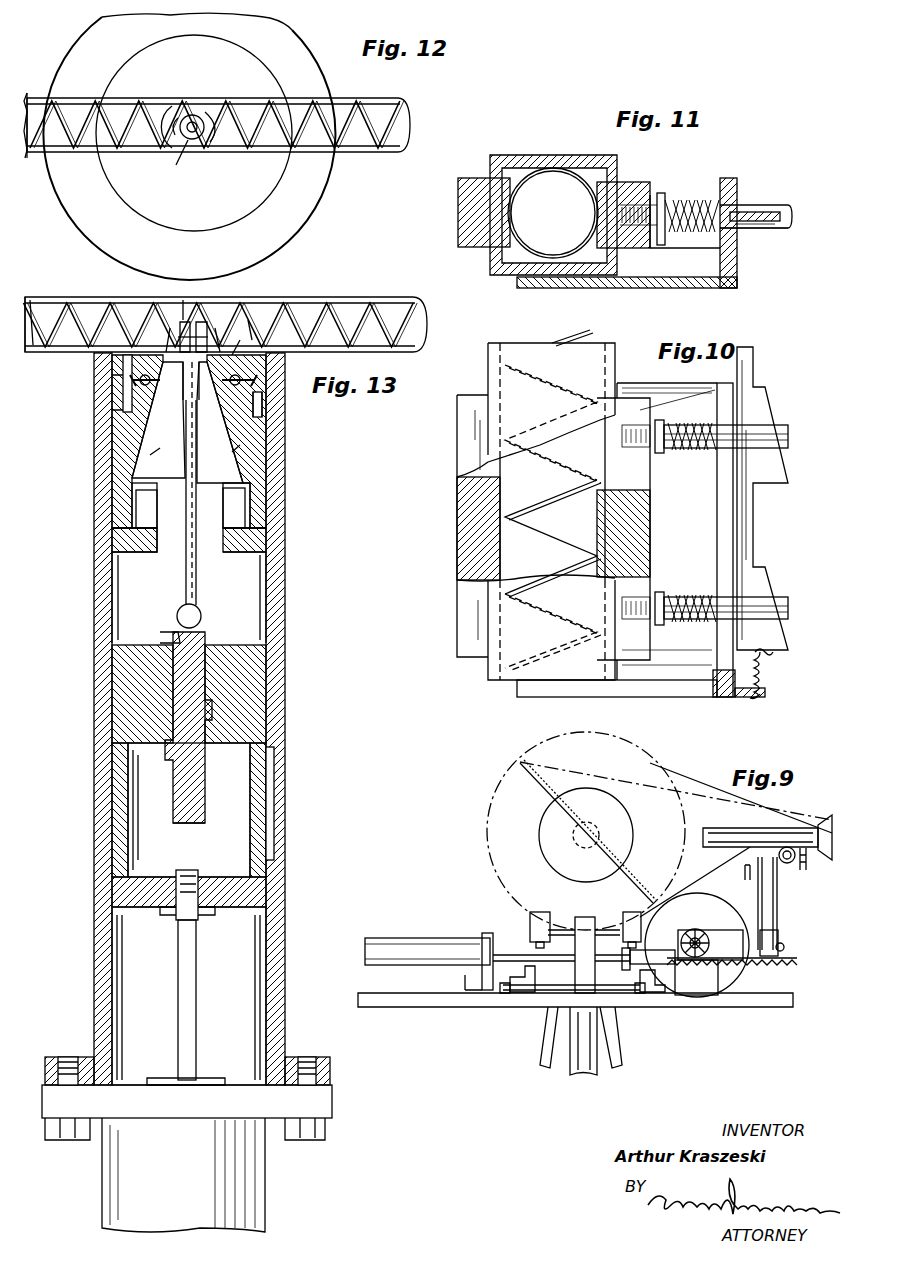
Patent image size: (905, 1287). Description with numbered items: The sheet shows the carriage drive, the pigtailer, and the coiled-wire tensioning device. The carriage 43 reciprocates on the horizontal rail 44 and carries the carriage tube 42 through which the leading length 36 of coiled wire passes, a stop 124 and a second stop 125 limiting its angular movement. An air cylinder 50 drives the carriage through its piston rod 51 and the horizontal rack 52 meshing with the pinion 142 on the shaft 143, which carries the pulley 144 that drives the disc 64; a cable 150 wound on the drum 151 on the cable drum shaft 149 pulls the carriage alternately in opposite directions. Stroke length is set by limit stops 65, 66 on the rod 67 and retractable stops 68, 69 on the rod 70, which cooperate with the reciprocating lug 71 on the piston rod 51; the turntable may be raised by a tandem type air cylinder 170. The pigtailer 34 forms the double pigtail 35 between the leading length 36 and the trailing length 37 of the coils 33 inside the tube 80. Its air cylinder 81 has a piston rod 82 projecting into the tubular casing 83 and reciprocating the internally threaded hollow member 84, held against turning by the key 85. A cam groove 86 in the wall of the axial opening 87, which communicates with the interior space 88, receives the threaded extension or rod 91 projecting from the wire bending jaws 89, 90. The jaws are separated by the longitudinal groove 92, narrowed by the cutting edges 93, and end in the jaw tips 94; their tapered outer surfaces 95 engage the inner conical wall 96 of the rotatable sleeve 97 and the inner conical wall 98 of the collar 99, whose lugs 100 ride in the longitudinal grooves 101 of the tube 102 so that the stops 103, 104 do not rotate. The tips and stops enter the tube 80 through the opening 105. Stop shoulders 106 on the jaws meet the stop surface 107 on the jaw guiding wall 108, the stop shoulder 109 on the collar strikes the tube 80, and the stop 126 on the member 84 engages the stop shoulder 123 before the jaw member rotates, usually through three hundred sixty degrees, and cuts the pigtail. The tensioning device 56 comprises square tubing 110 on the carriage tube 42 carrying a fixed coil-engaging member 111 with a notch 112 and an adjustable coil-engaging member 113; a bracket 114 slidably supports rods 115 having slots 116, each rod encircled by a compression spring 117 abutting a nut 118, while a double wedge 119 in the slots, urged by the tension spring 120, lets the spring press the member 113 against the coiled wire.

In FIG. 12, the coiled wire 33 is at (217, 126).
In FIG. 13, the coiled wire 33 is at (345, 300).
In FIG. 11, the coiled wire 33 is at (545, 258).
In FIG. 10, the coiled wire 33 is at (552, 540).
In FIG. 12, the pigtailer 34 is at (252, 200).
In FIG. 13, the pigtailer 34 is at (288, 662).
In FIG. 13, the double pigtail 35 is at (193, 322).
In FIG. 12, the leading length 36 is at (115, 140).
In FIG. 13, the leading length 36 is at (80, 300).
In FIG. 12, the trailing length 37 is at (234, 140).
In FIG. 13, the trailing length 37 is at (250, 300).
In FIG. 9, the carriage tube 42 is at (785, 830).
In FIG. 9, the carriage 43 is at (788, 865).
In FIG. 9, the horizontal rail 44 is at (815, 858).
In FIG. 9, the air cylinder 50 is at (398, 940).
In FIG. 9, the piston rod 51 is at (560, 961).
In FIG. 9, the horizontal rack 52 is at (752, 960).
In FIG. 11, the tensioning device 56 is at (748, 268).
In FIG. 10, the tensioning device 56 is at (700, 703).
In FIG. 9, the disc 64 is at (552, 865).
In FIG. 9, the limit stop 65 is at (518, 993).
In FIG. 9, the limit stop 66 is at (650, 993).
In FIG. 9, the rod 67 is at (545, 990).
In FIG. 9, the retractable stop 68 is at (536, 947).
In FIG. 9, the retractable stop 69 is at (623, 937).
In FIG. 9, the rod 70 is at (565, 925).
In FIG. 9, the reciprocating lug 71 is at (630, 962).
In FIG. 12, the tube 80 is at (357, 156).
In FIG. 13, the tube 80 is at (393, 310).
In FIG. 13, the air cylinder 81 is at (260, 1185).
In FIG. 13, the piston rod 82 is at (195, 1020).
In FIG. 13, the tubular casing 83 is at (275, 950).
In FIG. 13, the internally threaded hollow member 84 is at (258, 900).
In FIG. 13, the key 85 is at (268, 818).
In FIG. 13, the cam groove 86 is at (220, 722).
In FIG. 13, the axial opening 87 is at (210, 655).
In FIG. 13, the interior space 88 is at (225, 853).
In FIG. 13, the wire bending jaw 89 is at (222, 578).
In FIG. 13, the wire bending jaw 90 is at (162, 585).
In FIG. 13, the extension or rod 91 is at (180, 826).
In FIG. 13, the longitudinal groove 92 is at (195, 505).
In FIG. 12, the cutting edges 93 is at (196, 124).
In FIG. 13, the cutting edges 93 is at (183, 395).
In FIG. 12, the jaw tips 94 is at (185, 138).
In FIG. 13, the jaw tips 94 is at (185, 310).
In FIG. 13, the tapered outer surfaces 95 is at (238, 453).
In FIG. 13, the inner conical wall 96 is at (148, 456).
In FIG. 13, the reciprocating rotatable sleeve 97 is at (140, 478).
In FIG. 13, the inner conical wall 98 is at (190, 386).
In FIG. 13, the reciprocating collar 99 is at (203, 395).
In FIG. 13, the lugs 100 is at (255, 370).
In FIG. 13, the longitudinal grooves 101 is at (258, 415).
In FIG. 13, the tube 102 is at (268, 440).
In FIG. 12, the stop 103 is at (210, 130).
In FIG. 13, the stop 103 is at (208, 335).
In FIG. 12, the stop 104 is at (185, 118).
In FIG. 13, the stop 104 is at (176, 332).
In FIG. 12, the opening 105 is at (170, 130).
In FIG. 13, the opening 105 is at (262, 325).
In FIG. 13, the stop shoulders 106 is at (228, 468).
In FIG. 13, the stop surface 107 is at (245, 525).
In FIG. 13, the jaw guiding wall 108 is at (264, 545).
In FIG. 13, the stop shoulder 109 is at (130, 363).
In FIG. 11, the square tubing 110 is at (548, 166).
In FIG. 10, the square tubing 110 is at (512, 343).
In FIG. 11, the fixed coil-engaging member 111 is at (483, 245).
In FIG. 10, the fixed coil-engaging member 111 is at (460, 540).
In FIG. 11, the notch 112 is at (508, 215).
In FIG. 11, the adjustable coil-engaging member 113 is at (648, 185).
In FIG. 10, the adjustable coil-engaging member 113 is at (645, 538).
In FIG. 11, the bracket 114 is at (680, 288).
In FIG. 10, the bracket 114 is at (648, 690).
In FIG. 11, the rods 115 is at (786, 206).
In FIG. 10, the rods 115 is at (788, 440).
In FIG. 11, the slot 116 is at (755, 212).
In FIG. 10, the slot 116 is at (785, 428).
In FIG. 11, the compression spring 117 is at (700, 198).
In FIG. 10, the compression spring 117 is at (695, 428).
In FIG. 11, the nut 118 is at (662, 240).
In FIG. 10, the nut 118 is at (664, 420).
In FIG. 11, the double wedge 119 is at (790, 228).
In FIG. 10, the double wedge 119 is at (780, 480).
In FIG. 10, the tension spring 120 is at (768, 673).
In FIG. 13, the stop shoulder 123 is at (218, 632).
In FIG. 9, the stop 124 is at (747, 882).
In FIG. 9, the second stop 125 is at (808, 868).
In FIG. 13, the stop 126 is at (158, 628).
In FIG. 9, the pinion 142 is at (700, 930).
In FIG. 9, the shaft 143 is at (695, 960).
In FIG. 9, the pulley 144 is at (700, 902).
In FIG. 9, the cable drum shaft 149 is at (785, 947).
In FIG. 9, the cable 150 is at (778, 910).
In FIG. 9, the drum 151 is at (780, 937).
In FIG. 9, the tandem type air cylinder 170 is at (584, 1068).